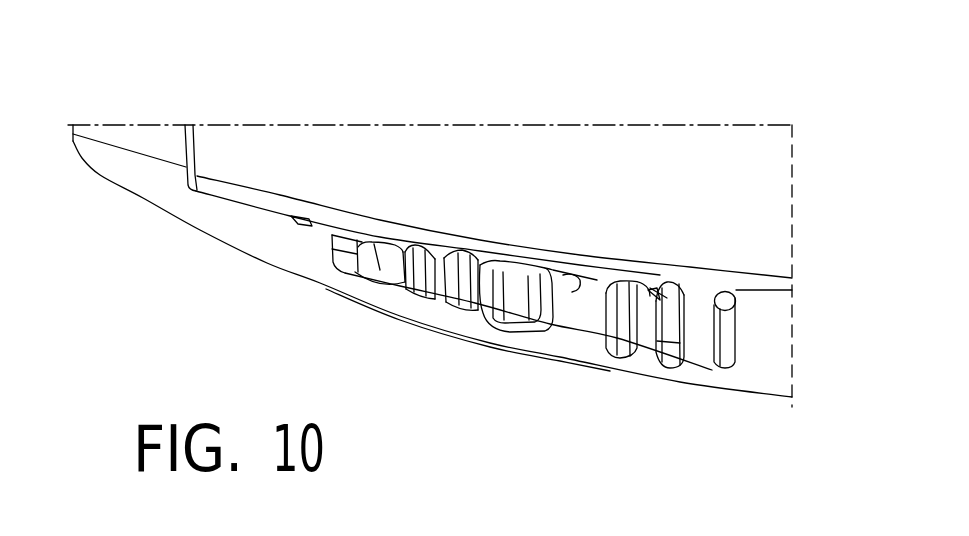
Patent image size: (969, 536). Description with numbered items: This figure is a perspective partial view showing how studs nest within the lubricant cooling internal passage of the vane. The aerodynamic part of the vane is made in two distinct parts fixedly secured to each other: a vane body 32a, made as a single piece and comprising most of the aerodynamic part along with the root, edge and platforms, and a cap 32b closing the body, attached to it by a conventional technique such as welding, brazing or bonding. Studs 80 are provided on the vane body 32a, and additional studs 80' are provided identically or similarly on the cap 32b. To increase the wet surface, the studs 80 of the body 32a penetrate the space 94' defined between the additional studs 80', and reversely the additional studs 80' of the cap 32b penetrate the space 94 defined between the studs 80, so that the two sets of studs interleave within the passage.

The vane body 32a is at (240, 225).
The cap 32b is at (273, 140).
The studs 80 is at (402, 320).
The additional studs 80' is at (658, 391).
The space 94 is at (538, 197).
The space 94' is at (638, 211).